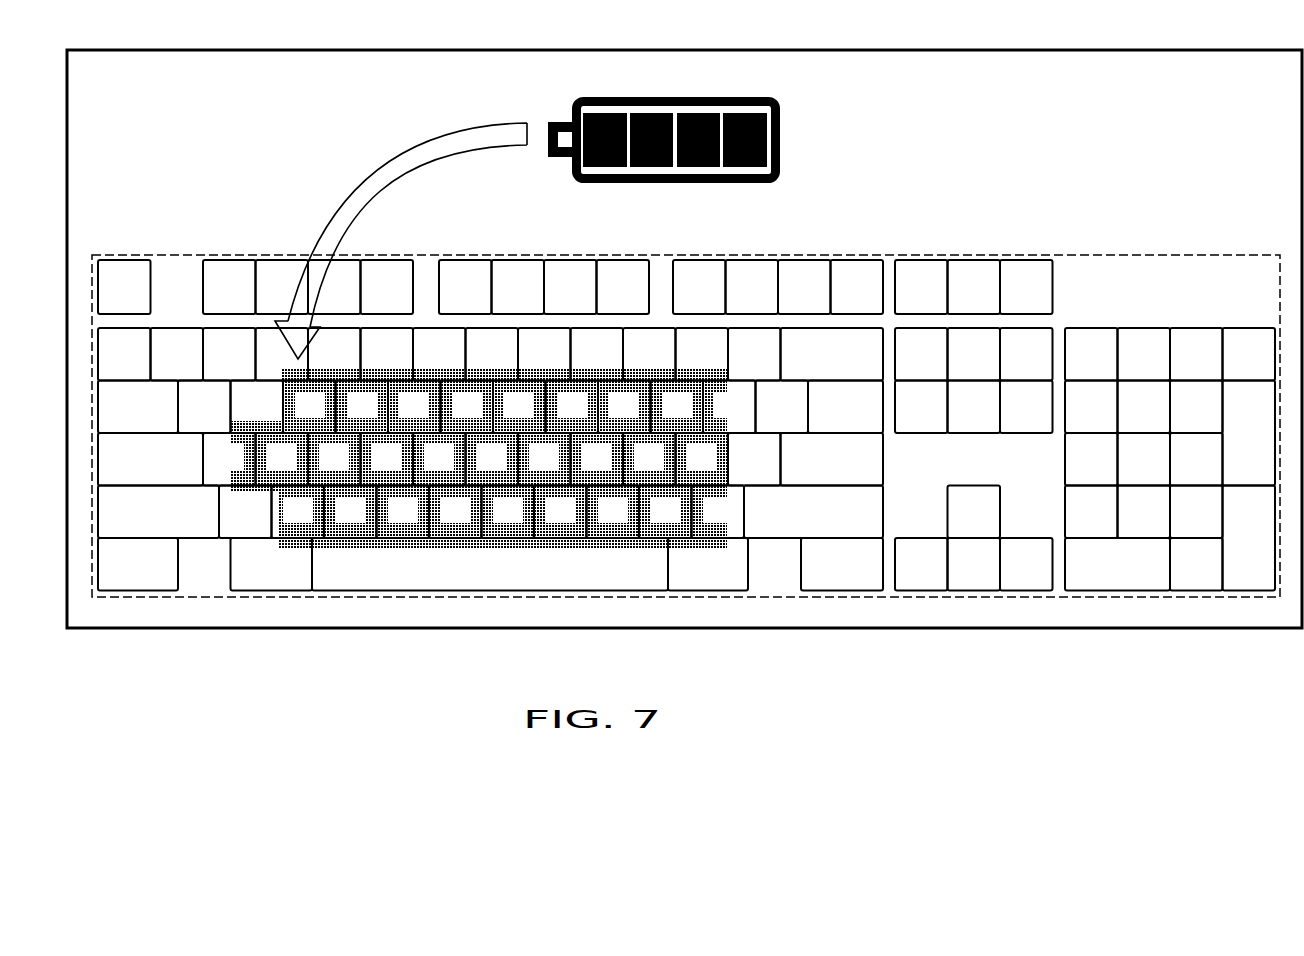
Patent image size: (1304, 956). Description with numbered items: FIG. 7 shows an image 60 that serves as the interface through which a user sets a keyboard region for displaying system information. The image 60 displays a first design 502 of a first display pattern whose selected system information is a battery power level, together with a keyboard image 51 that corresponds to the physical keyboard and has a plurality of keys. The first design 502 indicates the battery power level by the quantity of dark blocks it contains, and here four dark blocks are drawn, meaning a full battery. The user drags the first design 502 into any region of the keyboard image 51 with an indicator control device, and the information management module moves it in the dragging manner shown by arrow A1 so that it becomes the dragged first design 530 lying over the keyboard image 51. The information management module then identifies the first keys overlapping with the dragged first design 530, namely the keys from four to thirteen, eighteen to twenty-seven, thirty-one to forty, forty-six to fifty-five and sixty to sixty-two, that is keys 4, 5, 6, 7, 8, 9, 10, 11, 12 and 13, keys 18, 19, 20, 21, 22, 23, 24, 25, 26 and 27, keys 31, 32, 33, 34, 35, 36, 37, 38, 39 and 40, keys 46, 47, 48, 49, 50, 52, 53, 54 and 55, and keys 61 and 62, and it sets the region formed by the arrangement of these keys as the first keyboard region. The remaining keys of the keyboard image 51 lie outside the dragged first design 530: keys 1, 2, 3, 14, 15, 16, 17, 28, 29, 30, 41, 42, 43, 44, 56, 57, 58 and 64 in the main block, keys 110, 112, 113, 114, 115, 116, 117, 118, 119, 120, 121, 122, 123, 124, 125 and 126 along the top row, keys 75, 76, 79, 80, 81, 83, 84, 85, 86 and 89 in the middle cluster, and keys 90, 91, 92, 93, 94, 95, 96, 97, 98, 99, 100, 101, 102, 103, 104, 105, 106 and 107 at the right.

The image 60 is at (1193, 50).
The keyboard image 51 is at (1193, 255).
The first design 502 is at (781, 138).
The dragged first design 530 is at (505, 377).
The arrow A1 is at (340, 203).
The key 1 is at (124, 354).
The key 2 is at (177, 354).
The key 3 is at (229, 354).
The key 4 is at (282, 354).
The key 5 is at (334, 354).
The key 6 is at (387, 354).
The key 7 is at (439, 354).
The key 8 is at (492, 354).
The key 9 is at (544, 354).
The key 10 is at (597, 354).
The key 11 is at (649, 354).
The key 12 is at (702, 354).
The key 13 is at (754, 354).
The key 14 is at (832, 354).
The key 15 is at (832, 354).
The key 16 is at (138, 407).
The key 17 is at (204, 407).
The key 18 is at (257, 407).
The key 19 is at (309, 407).
The key 20 is at (362, 407).
The key 21 is at (414, 407).
The key 22 is at (467, 407).
The key 23 is at (519, 407).
The key 24 is at (572, 407).
The key 25 is at (624, 407).
The key 26 is at (677, 407).
The key 27 is at (729, 407).
The key 28 is at (782, 407).
The key 29 is at (845, 407).
The key 30 is at (150, 459).
The key 31 is at (229, 459).
The key 32 is at (282, 459).
The key 33 is at (334, 459).
The key 34 is at (387, 459).
The key 35 is at (439, 459).
The key 36 is at (492, 459).
The key 37 is at (544, 459).
The key 38 is at (597, 459).
The key 39 is at (649, 459).
The key 40 is at (702, 459).
The key 41 is at (754, 459).
The key 42 is at (832, 459).
The key 43 is at (832, 459).
The key 44 is at (158, 512).
The key 46 is at (245, 512).
The key 47 is at (298, 512).
The key 48 is at (350, 512).
The key 49 is at (403, 512).
The key 50 is at (455, 512).
The key 52 is at (560, 512).
The key 53 is at (613, 512).
The key 54 is at (665, 512).
The key 55 is at (718, 512).
The key 56 is at (813, 512).
The key 57 is at (813, 512).
The key 58 is at (138, 564).
The key 61 is at (490, 564).
The key 62 is at (708, 564).
The key 64 is at (842, 564).
The key 75 is at (921, 354).
The key 76 is at (921, 407).
The key 79 is at (921, 564).
The key 80 is at (974, 354).
The key 81 is at (974, 407).
The key 83 is at (974, 512).
The key 84 is at (974, 564).
The key 85 is at (1026, 354).
The key 86 is at (1026, 407).
The key 89 is at (1026, 564).
The key 90 is at (1091, 354).
The key 91 is at (1091, 407).
The key 92 is at (1091, 459).
The key 93 is at (1091, 512).
The key 94 is at (1117, 564).
The key 95 is at (1144, 354).
The key 96 is at (1144, 407).
The key 97 is at (1144, 459).
The key 98 is at (1144, 512).
The key 99 is at (1117, 564).
The key 100 is at (1196, 354).
The key 101 is at (1196, 407).
The keyboard 102 is at (1196, 459).
The indicator control device 103 is at (1196, 512).
The key 104 is at (1196, 564).
The key 105 is at (1249, 354).
The key 106 is at (1249, 486).
The key 107 is at (1249, 486).
The key 110 is at (124, 287).
The key 112 is at (229, 287).
The key 113 is at (282, 287).
The key 114 is at (334, 287).
The key 115 is at (387, 287).
The key 116 is at (465, 287).
The key 117 is at (518, 287).
The key 118 is at (570, 287).
The key 119 is at (623, 287).
The key 120 is at (699, 287).
The key 121 is at (752, 287).
The key 122 is at (804, 287).
The key 123 is at (857, 287).
The key 124 is at (921, 287).
The key 125 is at (974, 287).
The key 126 is at (1026, 287).